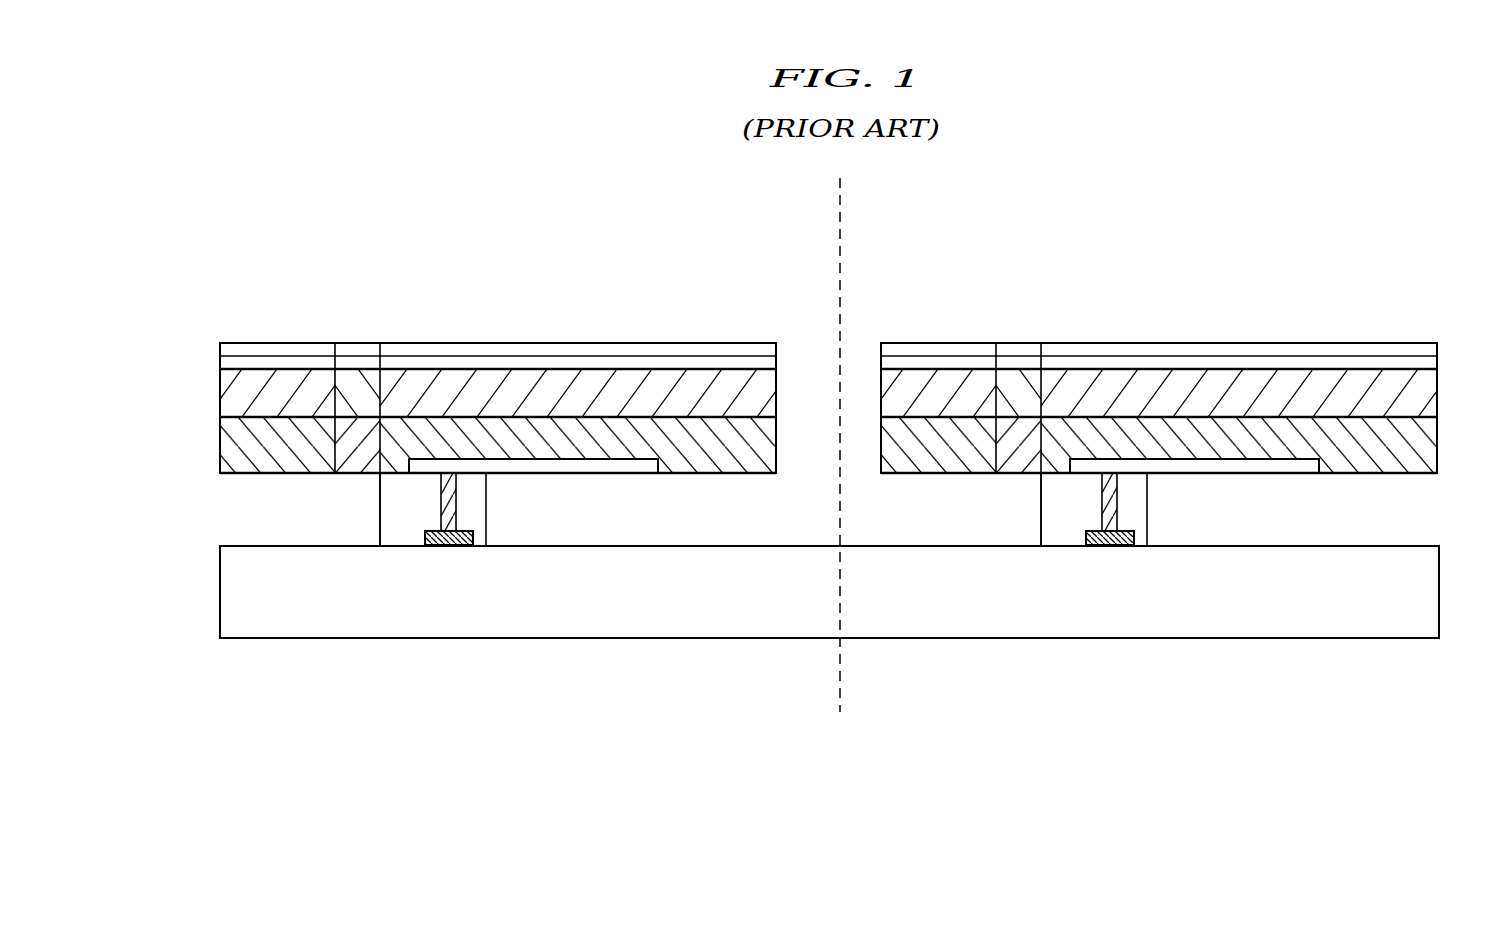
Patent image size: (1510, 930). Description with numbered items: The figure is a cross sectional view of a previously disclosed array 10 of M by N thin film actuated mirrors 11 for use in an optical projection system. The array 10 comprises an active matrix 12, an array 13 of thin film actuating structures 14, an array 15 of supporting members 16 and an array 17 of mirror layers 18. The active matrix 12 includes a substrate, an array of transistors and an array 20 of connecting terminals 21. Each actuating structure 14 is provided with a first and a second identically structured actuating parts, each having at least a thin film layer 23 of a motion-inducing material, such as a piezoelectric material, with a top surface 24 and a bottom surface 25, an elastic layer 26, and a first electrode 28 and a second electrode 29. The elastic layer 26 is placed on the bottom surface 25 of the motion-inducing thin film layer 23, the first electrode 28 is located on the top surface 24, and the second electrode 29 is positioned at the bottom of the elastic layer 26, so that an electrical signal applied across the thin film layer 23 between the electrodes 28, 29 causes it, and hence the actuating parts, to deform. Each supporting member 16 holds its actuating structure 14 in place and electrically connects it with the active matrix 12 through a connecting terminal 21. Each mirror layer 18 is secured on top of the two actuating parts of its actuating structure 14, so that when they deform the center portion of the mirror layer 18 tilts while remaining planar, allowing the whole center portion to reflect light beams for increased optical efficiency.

The array of thin film actuated mirrors 10 is at (1162, 150).
The thin film actuated mirror 11 is at (220, 265).
The active matrix 12 is at (200, 546).
The array of thin film actuating structures 13 is at (200, 369).
The thin film actuating structure 14 is at (538, 428).
The array of supporting members 15 is at (200, 473).
The supporting member 16 is at (395, 505).
The array of mirror layers 17 is at (200, 343).
The mirror layer 18 is at (405, 350).
The array of connecting terminals 20 is at (253, 527).
The connecting terminal 21 is at (438, 547).
The thin film layer of motion-inducing material 23 is at (733, 402).
The top surface 24 is at (703, 368).
The bottom surface 25 is at (758, 418).
The elastic layer 26 is at (687, 453).
The first electrode 28 is at (753, 361).
The second electrode 29 is at (575, 468).